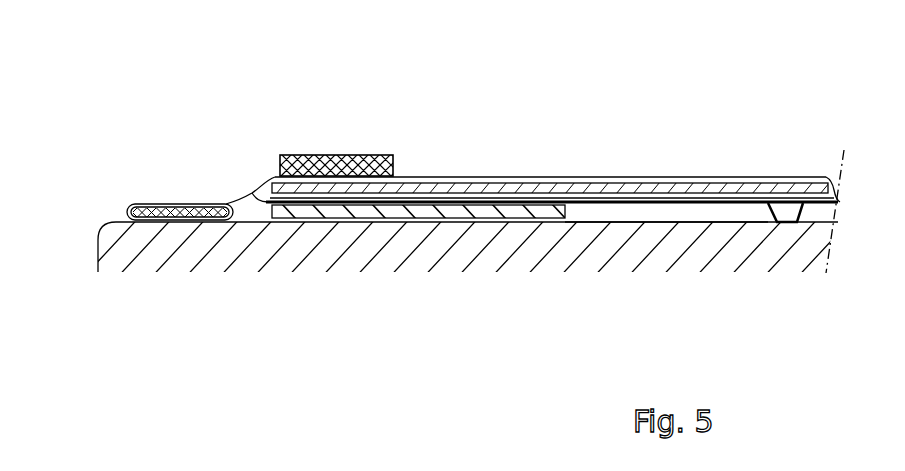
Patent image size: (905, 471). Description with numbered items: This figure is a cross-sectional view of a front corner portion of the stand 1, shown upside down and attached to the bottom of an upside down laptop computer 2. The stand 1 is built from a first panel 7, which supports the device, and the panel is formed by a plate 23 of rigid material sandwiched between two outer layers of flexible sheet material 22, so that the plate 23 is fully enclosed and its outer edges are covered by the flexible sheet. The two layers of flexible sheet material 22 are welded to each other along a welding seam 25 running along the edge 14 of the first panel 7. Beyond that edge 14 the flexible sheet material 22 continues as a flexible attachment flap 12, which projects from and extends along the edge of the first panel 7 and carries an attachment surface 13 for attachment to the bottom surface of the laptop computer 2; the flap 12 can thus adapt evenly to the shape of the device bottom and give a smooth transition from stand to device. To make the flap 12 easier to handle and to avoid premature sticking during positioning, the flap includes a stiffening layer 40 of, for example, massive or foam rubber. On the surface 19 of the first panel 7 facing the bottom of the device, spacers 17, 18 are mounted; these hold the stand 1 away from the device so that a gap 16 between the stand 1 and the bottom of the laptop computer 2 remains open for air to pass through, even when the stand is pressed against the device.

The stand 1 is at (635, 140).
The laptop computer 2 is at (95, 258).
The first panel 7 is at (731, 173).
The flexible attachment flap 12 is at (144, 201).
The attachment surface 13 is at (180, 215).
The edge of the first panel 14 is at (262, 178).
The gap 16 is at (652, 212).
The outer spacer 17 is at (565, 212).
The spacer 18 is at (791, 212).
The surface of the first panel 19 is at (720, 203).
The outer layer of flexible sheet material 22 is at (188, 203).
The plate 23 is at (695, 196).
The welding seam 25 is at (252, 193).
The stiffening layer 40 is at (153, 220).